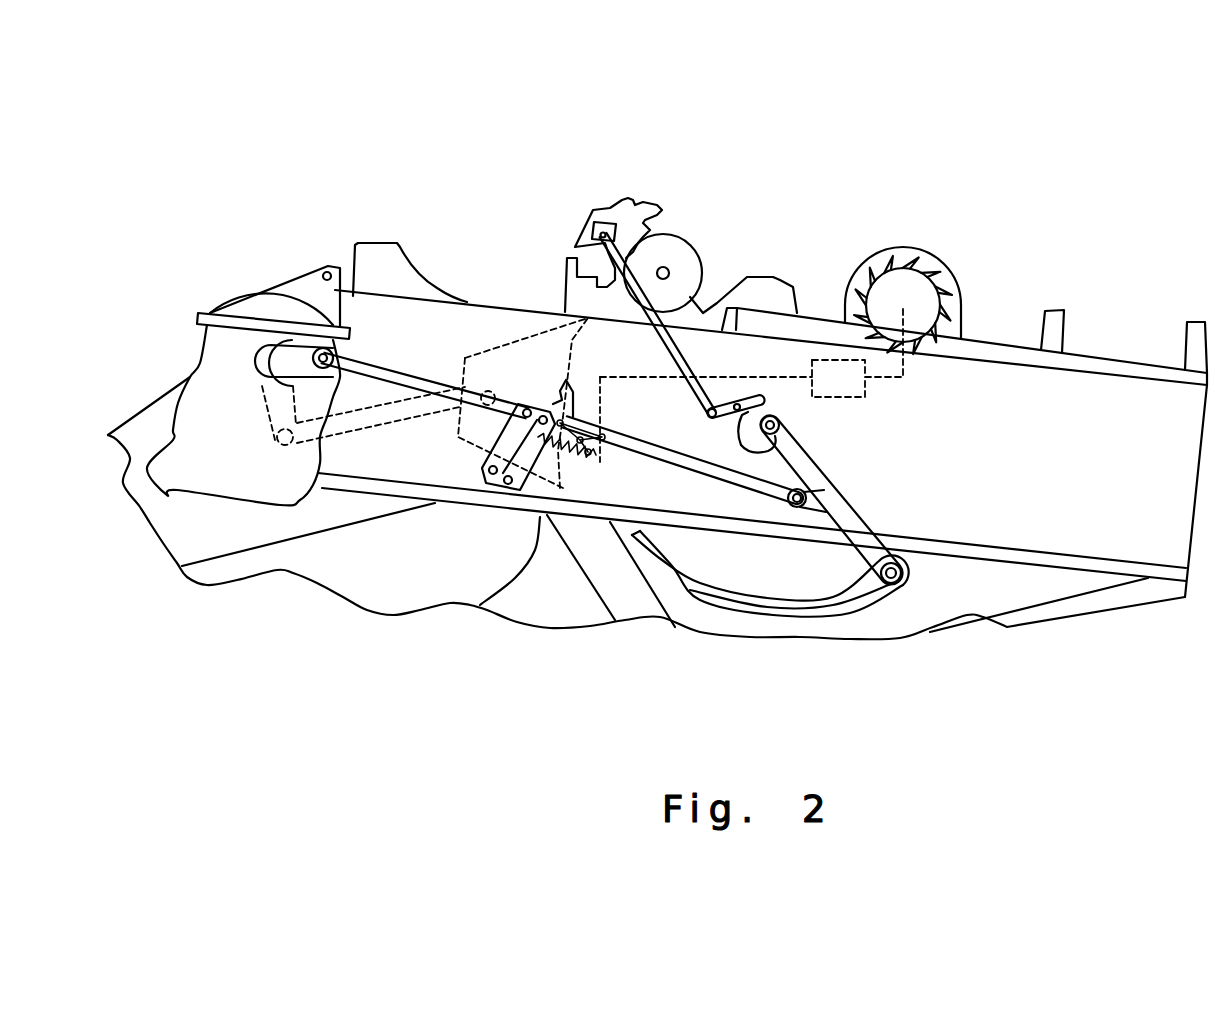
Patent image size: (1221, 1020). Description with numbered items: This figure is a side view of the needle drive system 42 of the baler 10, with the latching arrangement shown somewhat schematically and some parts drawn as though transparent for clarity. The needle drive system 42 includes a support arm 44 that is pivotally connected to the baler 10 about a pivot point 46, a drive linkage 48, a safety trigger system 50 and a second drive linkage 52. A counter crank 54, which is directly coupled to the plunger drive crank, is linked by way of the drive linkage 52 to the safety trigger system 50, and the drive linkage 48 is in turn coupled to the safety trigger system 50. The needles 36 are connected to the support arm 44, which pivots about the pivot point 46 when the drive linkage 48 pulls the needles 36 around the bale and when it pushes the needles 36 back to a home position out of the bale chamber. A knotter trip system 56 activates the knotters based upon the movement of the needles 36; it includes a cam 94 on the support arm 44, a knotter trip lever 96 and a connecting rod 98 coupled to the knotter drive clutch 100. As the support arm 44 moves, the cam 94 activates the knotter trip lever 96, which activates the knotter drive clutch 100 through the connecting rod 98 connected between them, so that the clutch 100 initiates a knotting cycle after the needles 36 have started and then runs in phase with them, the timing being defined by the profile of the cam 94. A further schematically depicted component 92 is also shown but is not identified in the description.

The baler 10 is at (978, 208).
The needles 36 is at (767, 610).
The needle drive system 42 is at (860, 455).
The support arm 44 is at (847, 507).
The pivot point 46 is at (778, 420).
The drive linkage 48 is at (655, 455).
The safety trigger system 50 is at (531, 383).
The drive linkage 52 is at (387, 372).
The counter crank 54 is at (297, 343).
The knotter trip system 56 is at (737, 373).
The controller 92 is at (867, 393).
The cam 94 is at (740, 433).
The knotter trip lever 96 is at (757, 397).
The connecting rod 98 is at (662, 340).
The knotter drive clutch 100 is at (612, 210).